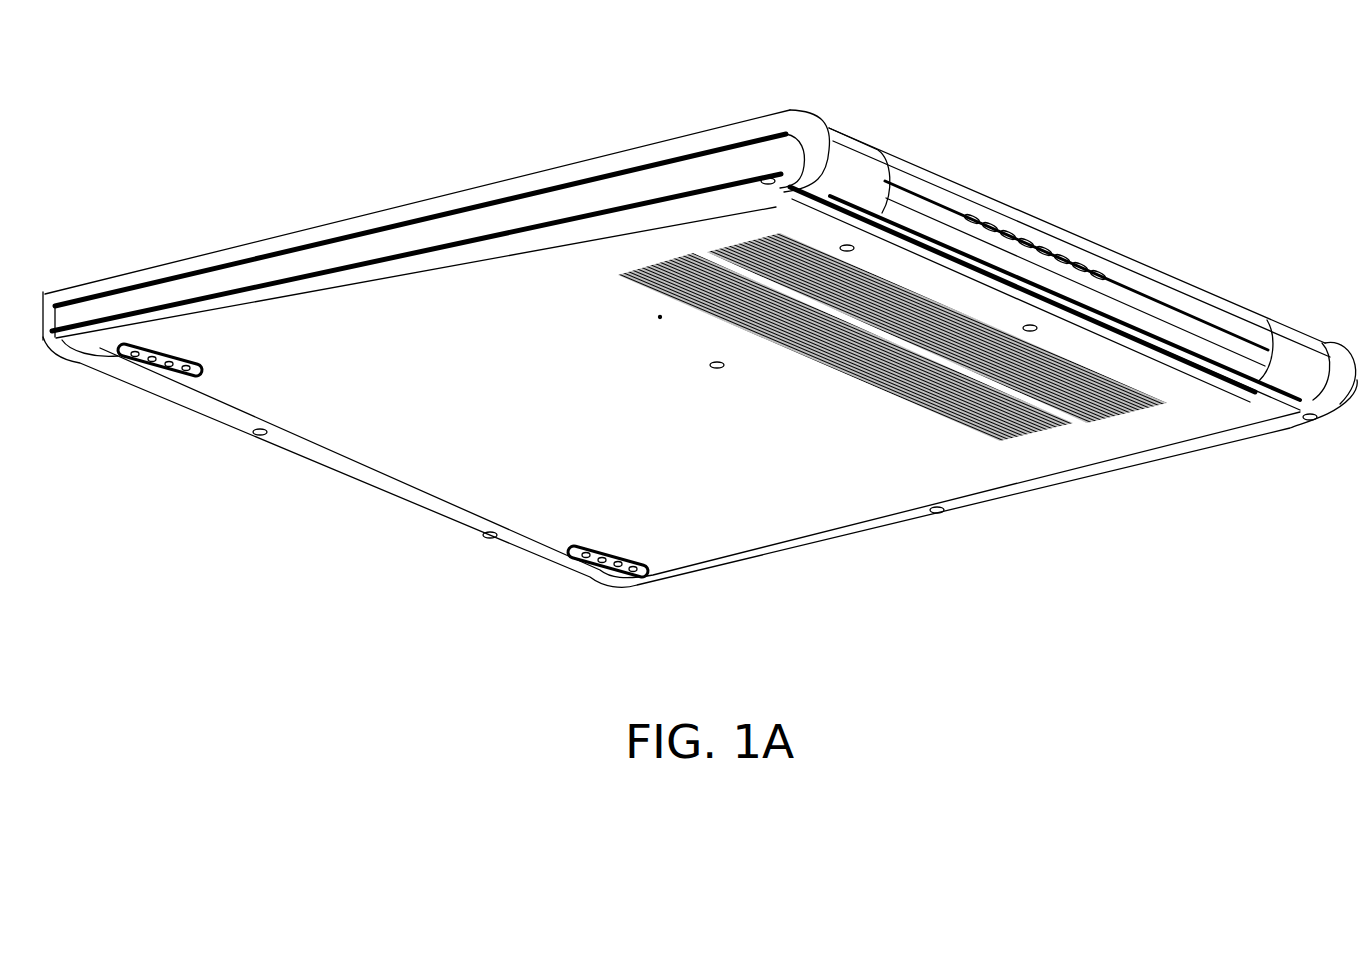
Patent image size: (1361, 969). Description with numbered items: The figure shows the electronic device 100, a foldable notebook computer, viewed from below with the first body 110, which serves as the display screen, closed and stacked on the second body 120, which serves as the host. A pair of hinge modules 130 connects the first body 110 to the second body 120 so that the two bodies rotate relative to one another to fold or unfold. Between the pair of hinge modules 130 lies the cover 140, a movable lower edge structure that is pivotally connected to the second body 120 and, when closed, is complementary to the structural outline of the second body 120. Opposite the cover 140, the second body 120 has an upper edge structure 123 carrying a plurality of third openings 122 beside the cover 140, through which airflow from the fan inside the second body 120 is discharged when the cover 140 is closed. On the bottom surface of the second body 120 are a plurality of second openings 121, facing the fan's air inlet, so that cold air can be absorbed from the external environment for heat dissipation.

The electronic device 100 is at (1323, 644).
The first body 110 is at (153, 272).
The second body 120 is at (237, 387).
The second openings 121 is at (1040, 382).
The third openings 122 is at (1062, 250).
The upper edge structure 123 is at (960, 210).
The hinge module 130 is at (848, 150).
The cover 140 is at (1155, 330).